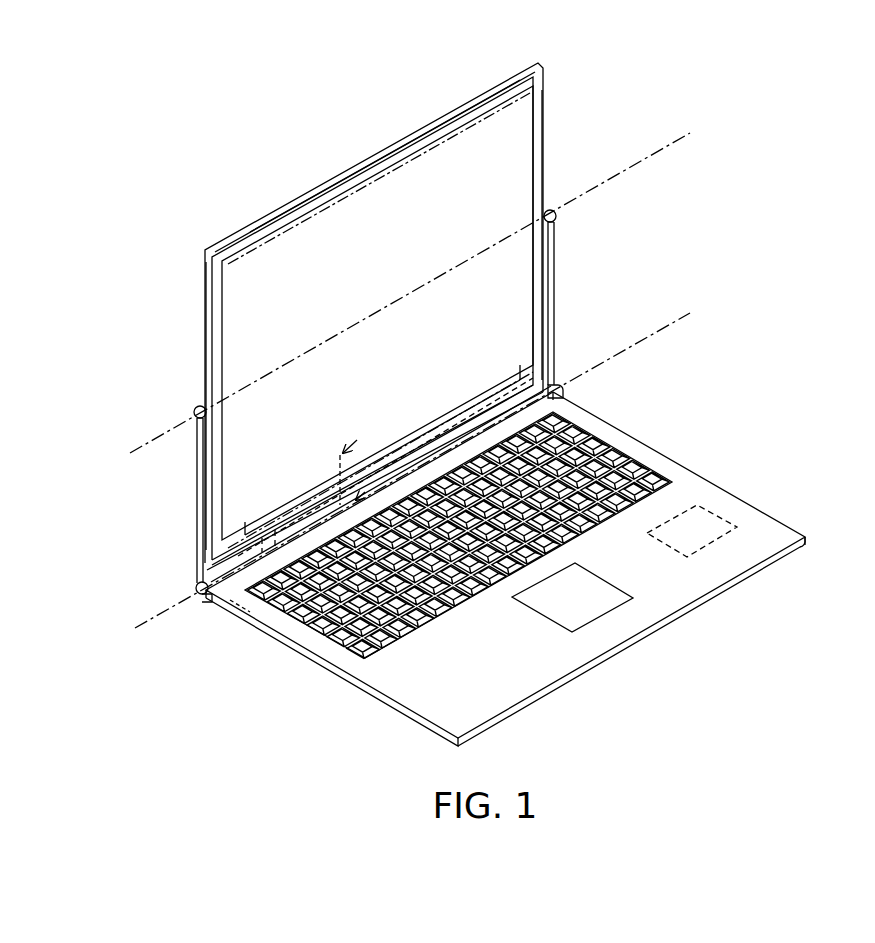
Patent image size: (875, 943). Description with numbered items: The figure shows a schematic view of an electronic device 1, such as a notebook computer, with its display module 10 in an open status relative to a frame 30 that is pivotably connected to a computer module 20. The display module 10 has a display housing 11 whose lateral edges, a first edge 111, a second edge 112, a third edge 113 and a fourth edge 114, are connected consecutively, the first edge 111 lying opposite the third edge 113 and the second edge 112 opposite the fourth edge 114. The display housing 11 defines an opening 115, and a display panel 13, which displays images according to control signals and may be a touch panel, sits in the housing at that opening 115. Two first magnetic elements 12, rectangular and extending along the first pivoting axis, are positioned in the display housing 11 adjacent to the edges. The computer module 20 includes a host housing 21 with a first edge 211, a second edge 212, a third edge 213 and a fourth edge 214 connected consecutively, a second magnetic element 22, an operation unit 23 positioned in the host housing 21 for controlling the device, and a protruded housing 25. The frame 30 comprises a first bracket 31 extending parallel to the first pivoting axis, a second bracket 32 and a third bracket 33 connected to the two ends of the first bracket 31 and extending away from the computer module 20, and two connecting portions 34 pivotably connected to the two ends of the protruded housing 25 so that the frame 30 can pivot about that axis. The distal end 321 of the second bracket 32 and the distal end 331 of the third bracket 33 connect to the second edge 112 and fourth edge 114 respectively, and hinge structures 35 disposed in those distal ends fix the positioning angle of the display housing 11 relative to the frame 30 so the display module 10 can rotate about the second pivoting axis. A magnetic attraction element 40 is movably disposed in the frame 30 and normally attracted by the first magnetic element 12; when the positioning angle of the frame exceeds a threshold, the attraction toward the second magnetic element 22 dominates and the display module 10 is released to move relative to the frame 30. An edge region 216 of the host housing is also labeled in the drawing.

The electronic device 1 is at (135, 168).
The display module 10 is at (552, 88).
The display housing 11 is at (200, 254).
The first magnetic element 12 is at (272, 228).
The display panel 13 is at (330, 245).
The first edge 111 is at (522, 378).
The second edge 112 is at (547, 125).
The third edge 113 is at (383, 148).
The fourth edge 114 is at (203, 310).
The opening 115 is at (440, 118).
The computer module 20 is at (700, 462).
The host housing 21 is at (505, 680).
The second magnetic element 22 is at (262, 608).
The operation unit 23 is at (712, 525).
The protruded housing 25 is at (565, 415).
The first edge 211 is at (708, 618).
The second edge 212 is at (778, 512).
The third edge 213 is at (575, 406).
The fourth edge 214 is at (420, 727).
The left side of host 216 is at (425, 680).
The frame 30 is at (556, 262).
The first bracket 31 is at (545, 388).
The second bracket 32 is at (552, 300).
The third bracket 33 is at (192, 470).
The connecting portion 34 is at (565, 392).
The hinge structure 35 is at (549, 212).
The distal end 321 is at (557, 222).
The distal end 331 is at (196, 410).
The magnetic attraction element 40 is at (265, 546).